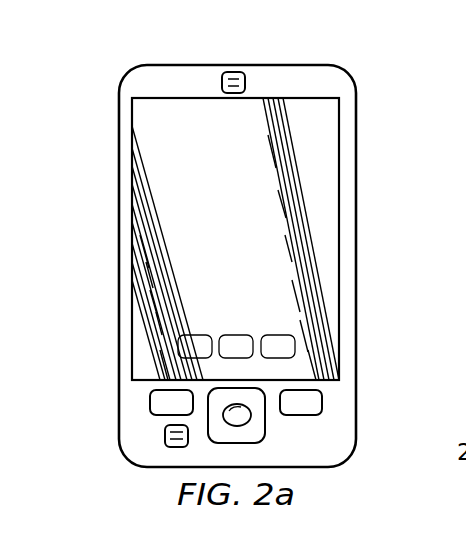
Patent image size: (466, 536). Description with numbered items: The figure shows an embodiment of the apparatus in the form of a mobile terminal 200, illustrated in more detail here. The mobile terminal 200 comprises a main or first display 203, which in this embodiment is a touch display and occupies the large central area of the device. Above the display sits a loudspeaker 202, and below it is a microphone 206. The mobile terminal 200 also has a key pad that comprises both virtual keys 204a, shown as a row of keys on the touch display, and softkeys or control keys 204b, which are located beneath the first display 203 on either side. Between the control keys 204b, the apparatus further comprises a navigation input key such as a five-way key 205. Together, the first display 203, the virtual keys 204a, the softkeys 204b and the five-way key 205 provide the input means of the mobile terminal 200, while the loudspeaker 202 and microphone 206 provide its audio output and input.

The mobile terminal 200 is at (363, 151).
The loudspeaker 202 is at (223, 79).
The first display 203 is at (132, 238).
The virtual keys 204a is at (236, 333).
The softkeys 204b is at (150, 402).
The five-way key 205 is at (265, 420).
The microphone 206 is at (165, 437).